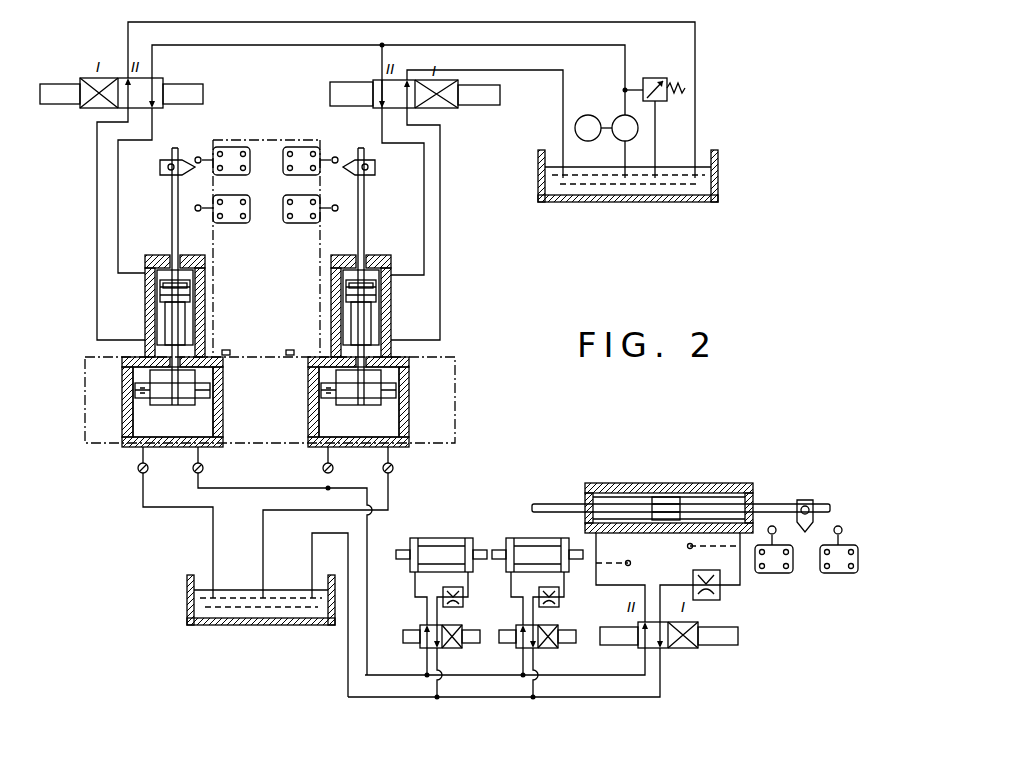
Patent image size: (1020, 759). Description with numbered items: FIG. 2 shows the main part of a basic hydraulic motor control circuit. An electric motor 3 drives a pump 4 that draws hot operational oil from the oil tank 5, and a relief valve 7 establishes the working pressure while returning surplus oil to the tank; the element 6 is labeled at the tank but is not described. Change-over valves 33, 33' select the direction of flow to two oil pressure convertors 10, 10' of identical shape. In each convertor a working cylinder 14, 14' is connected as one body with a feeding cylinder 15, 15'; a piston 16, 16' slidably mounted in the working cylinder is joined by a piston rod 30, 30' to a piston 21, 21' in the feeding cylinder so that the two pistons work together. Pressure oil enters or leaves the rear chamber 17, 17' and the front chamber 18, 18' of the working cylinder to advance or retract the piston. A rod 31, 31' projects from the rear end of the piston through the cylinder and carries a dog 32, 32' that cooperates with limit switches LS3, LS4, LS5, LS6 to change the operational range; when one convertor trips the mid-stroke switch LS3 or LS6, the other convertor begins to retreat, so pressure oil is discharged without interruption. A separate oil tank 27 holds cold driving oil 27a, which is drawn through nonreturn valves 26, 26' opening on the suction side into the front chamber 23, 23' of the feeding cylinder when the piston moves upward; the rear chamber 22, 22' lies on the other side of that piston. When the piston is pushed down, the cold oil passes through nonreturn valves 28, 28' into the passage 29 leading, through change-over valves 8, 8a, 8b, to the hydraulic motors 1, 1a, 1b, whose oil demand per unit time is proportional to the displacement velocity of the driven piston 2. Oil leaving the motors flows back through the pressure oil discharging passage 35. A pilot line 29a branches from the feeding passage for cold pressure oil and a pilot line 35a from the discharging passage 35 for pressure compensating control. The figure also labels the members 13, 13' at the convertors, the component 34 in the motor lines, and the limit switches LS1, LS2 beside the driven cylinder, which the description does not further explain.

The hydraulic motor 1 is at (713, 484).
The hydraulic motor 1a is at (530, 545).
The hydraulic motor 1b is at (445, 541).
The piston 2 is at (658, 496).
The electric motor 3 is at (592, 115).
The pump 4 is at (616, 141).
The oil tank 5 is at (562, 204).
The reservoir tank 6 is at (605, 197).
The relief valve 7 is at (660, 78).
The change-over valve 8 is at (700, 648).
The valve 8a is at (555, 648).
The valve 8b is at (455, 648).
The oil pressure convertor 10 is at (195, 266).
The oil pressure convertor 10' is at (332, 266).
The stop member 13 is at (223, 342).
The stop member 13' is at (306, 342).
The working cylinder 14 is at (154, 312).
The working cylinder 14' is at (340, 312).
The feeding cylinder 15 is at (157, 402).
The feeding cylinder 15' is at (343, 402).
The piston 16 is at (145, 293).
The piston 16' is at (328, 293).
The rear chamber 17 is at (202, 291).
The rear chamber 17' is at (390, 291).
The front chamber 18 is at (204, 323).
The front chamber 18' is at (392, 323).
The piston 21 is at (120, 398).
The piston 21' is at (309, 399).
The rear chamber 22 is at (203, 387).
The rear chamber 22' is at (386, 387).
The front chamber 23 is at (197, 402).
The front chamber 23' is at (383, 402).
The nonreturn valve 26 is at (123, 469).
The nonreturn valve 26' is at (418, 467).
The oil tank 27 is at (187, 590).
The driving oil 27a is at (194, 624).
The nonreturn valve 28 is at (215, 473).
The nonreturn valve 28' is at (301, 473).
The passage 29 is at (487, 677).
The pilot line 29a is at (630, 566).
The piston rod 30 is at (85, 346).
The piston rod 30' is at (440, 344).
The rod 31 is at (154, 209).
The rod 31' is at (383, 209).
The dog 32 is at (160, 174).
The dog 32' is at (378, 173).
The change-over valve 33 is at (121, 112).
The change-over valve 33' is at (415, 112).
The flow control valve 34 is at (463, 604).
The pressure oil discharging passage 35 is at (395, 698).
The pilot line 35a is at (688, 547).
The limit switch LS1 is at (774, 574).
The limit switch LS2 is at (838, 574).
The limit switch LS3 is at (301, 222).
The limit switch LS4 is at (231, 150).
The limit switch LS5 is at (297, 150).
The limit switch LS6 is at (230, 222).